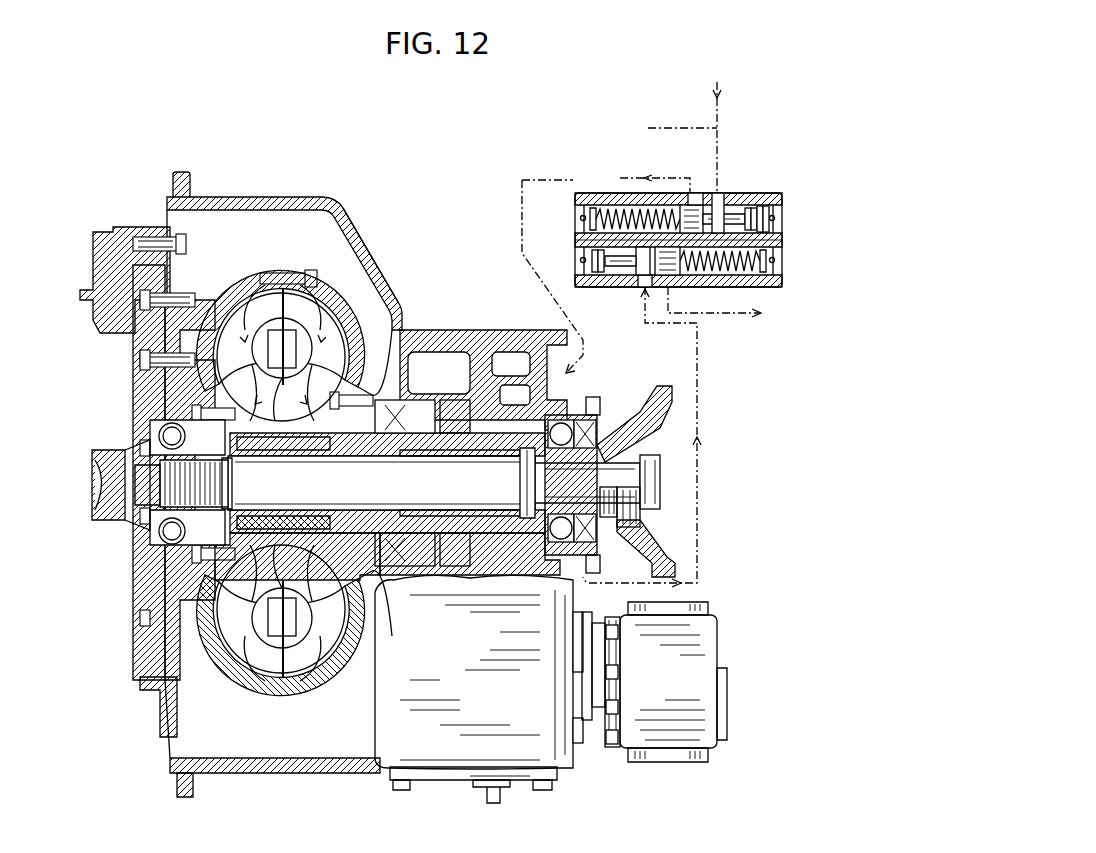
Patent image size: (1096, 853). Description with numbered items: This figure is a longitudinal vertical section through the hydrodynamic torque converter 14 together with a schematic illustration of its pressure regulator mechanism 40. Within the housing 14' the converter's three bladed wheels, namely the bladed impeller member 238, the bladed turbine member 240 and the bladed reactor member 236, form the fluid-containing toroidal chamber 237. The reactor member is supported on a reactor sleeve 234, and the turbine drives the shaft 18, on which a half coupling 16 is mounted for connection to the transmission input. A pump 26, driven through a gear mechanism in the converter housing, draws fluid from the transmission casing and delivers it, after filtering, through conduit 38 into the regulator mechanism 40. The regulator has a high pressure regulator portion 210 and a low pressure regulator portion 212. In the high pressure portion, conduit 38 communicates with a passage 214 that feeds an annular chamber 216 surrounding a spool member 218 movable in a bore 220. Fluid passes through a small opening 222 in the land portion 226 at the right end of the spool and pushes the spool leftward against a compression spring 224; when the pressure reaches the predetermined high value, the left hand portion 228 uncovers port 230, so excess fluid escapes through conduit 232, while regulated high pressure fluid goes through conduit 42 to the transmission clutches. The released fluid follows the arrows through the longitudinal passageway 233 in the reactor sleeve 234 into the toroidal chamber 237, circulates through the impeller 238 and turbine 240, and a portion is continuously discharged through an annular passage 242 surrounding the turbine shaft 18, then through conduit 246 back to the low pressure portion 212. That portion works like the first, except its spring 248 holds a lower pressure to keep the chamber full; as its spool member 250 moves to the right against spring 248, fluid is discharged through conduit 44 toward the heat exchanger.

The hydrodynamic torque converter 14 is at (323, 467).
The housing 14' is at (370, 241).
The half coupling 16 is at (655, 426).
The shaft 18 is at (318, 484).
The pump 26 is at (672, 691).
The conduit 38 is at (722, 80).
The pressure regulator mechanism 40 is at (573, 188).
The conduit 42 is at (668, 128).
The conduit 44 is at (740, 316).
The high pressure regulator portion 210 is at (570, 218).
The low pressure regulator portion 212 is at (570, 266).
The passage 214 is at (727, 192).
The annular chamber 216 is at (736, 196).
The spool member 218 is at (746, 199).
The bore 220 is at (775, 208).
The small opening 222 is at (760, 192).
The compression spring 224 is at (634, 212).
The land portion 226 is at (782, 239).
The left hand portion 228 is at (686, 195).
The port 230 is at (716, 192).
The conduit 232 is at (522, 192).
The longitudinal passageway 233 is at (520, 484).
The reactor sleeve 234 is at (463, 484).
The bladed reactor member 236 is at (299, 424).
The toroidal chamber 237 is at (305, 300).
The bladed impeller member 238 is at (330, 333).
The bladed turbine member 240 is at (248, 300).
The annular passage 242 is at (250, 484).
The conduit 246 is at (703, 438).
The spring 248 is at (745, 270).
The spool member 250 is at (633, 287).